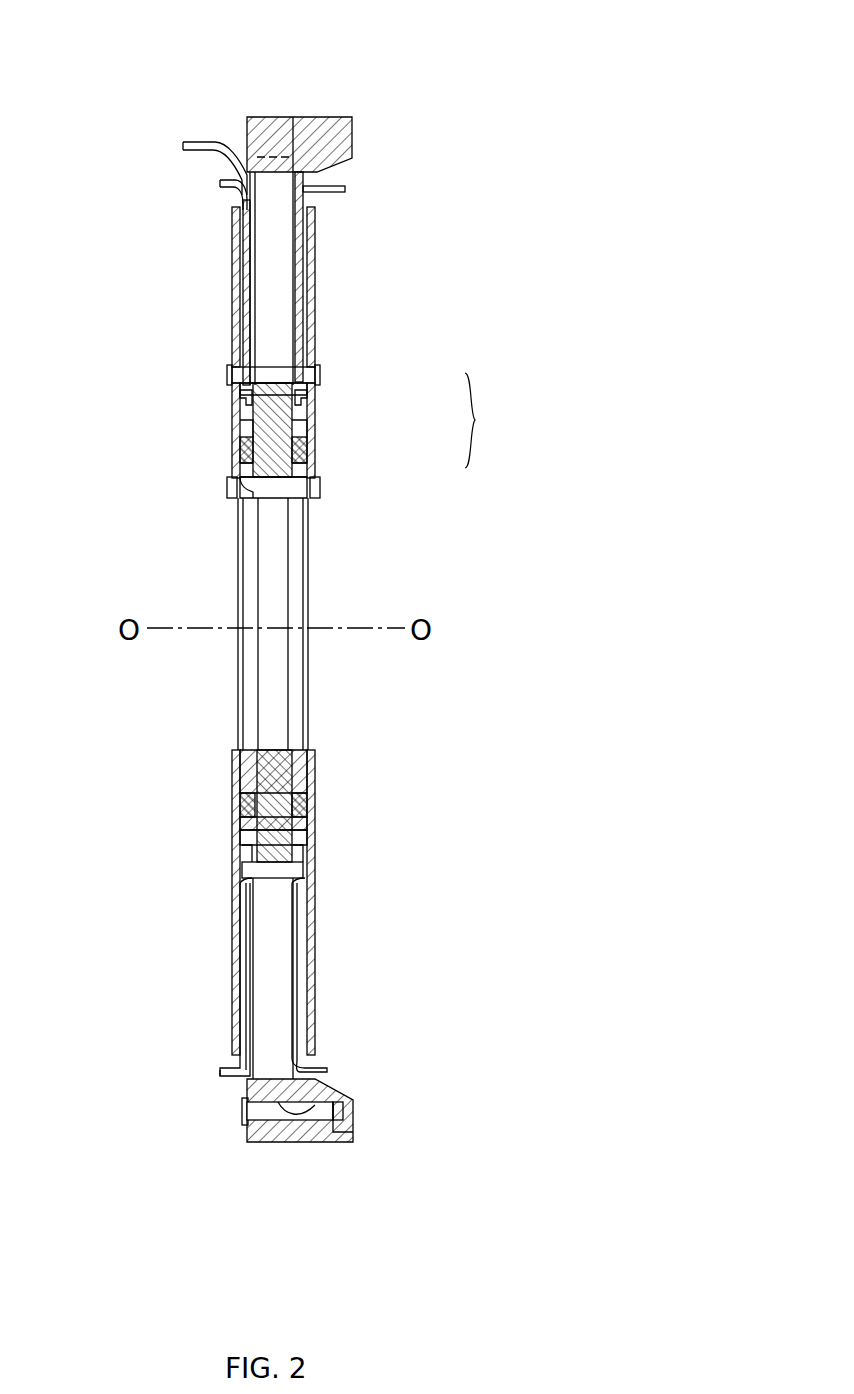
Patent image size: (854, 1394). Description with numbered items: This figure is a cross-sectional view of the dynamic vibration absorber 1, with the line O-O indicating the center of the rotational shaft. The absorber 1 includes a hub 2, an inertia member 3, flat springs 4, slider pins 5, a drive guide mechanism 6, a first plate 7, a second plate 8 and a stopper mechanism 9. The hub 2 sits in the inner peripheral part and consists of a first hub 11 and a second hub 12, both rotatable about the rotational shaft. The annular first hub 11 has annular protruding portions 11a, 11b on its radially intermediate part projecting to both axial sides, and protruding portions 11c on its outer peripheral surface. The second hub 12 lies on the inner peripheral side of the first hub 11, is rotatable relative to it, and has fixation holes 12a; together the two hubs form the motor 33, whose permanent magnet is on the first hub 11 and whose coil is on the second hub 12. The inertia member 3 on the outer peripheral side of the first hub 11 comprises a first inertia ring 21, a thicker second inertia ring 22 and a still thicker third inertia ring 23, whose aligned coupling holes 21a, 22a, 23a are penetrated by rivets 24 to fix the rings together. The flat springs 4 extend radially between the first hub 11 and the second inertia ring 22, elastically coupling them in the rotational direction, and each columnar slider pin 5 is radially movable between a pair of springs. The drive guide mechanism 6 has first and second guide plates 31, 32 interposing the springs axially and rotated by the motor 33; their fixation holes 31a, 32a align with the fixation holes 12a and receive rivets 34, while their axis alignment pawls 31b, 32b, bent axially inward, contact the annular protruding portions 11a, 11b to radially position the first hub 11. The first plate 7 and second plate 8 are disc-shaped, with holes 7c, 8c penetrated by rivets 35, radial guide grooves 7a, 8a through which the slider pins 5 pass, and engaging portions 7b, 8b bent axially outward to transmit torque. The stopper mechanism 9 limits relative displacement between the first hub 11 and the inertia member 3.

The dynamic vibration absorber 1 is at (110, 192).
The hub 2 is at (320, 463).
The inertia member 3 is at (340, 95).
The flat spring 4 is at (276, 288).
The slider pin 5 is at (286, 366).
The drive guide mechanism 6 is at (234, 452).
The first plate 7 is at (220, 192).
The guide groove 7a is at (247, 247).
The engaging portion 7b is at (200, 142).
The hole 7c is at (246, 882).
The second plate 8 is at (355, 190).
The guide groove 8a is at (300, 242).
The engaging portion 8b is at (340, 190).
The hole 8c is at (300, 868).
The stopper mechanism 9 is at (322, 170).
The first hub 11 is at (300, 402).
The annular protruding portion 11a is at (242, 832).
The annular protruding portion 11b is at (302, 832).
The protruding portion 11c is at (303, 884).
The second hub 12 is at (302, 473).
The fixation hole 12a is at (254, 498).
The first inertia ring 21 is at (252, 1140).
The coupling hole 21a is at (256, 1110).
The second inertia ring 22 is at (280, 1140).
The coupling hole 22a is at (330, 1092).
The third inertia ring 23 is at (325, 1142).
The coupling hole 23a is at (322, 1115).
The rivet 24 is at (240, 1085).
The first guide plate 31 is at (232, 305).
The fixation hole 31a is at (230, 486).
The axis alignment pawl 31b is at (242, 412).
The second guide plate 32 is at (314, 300).
The fixation hole 32a is at (308, 500).
The axis alignment pawl 32b is at (305, 420).
The motor 33 is at (316, 792).
The rivet 34 is at (240, 505).
The rivet 35 is at (272, 878).